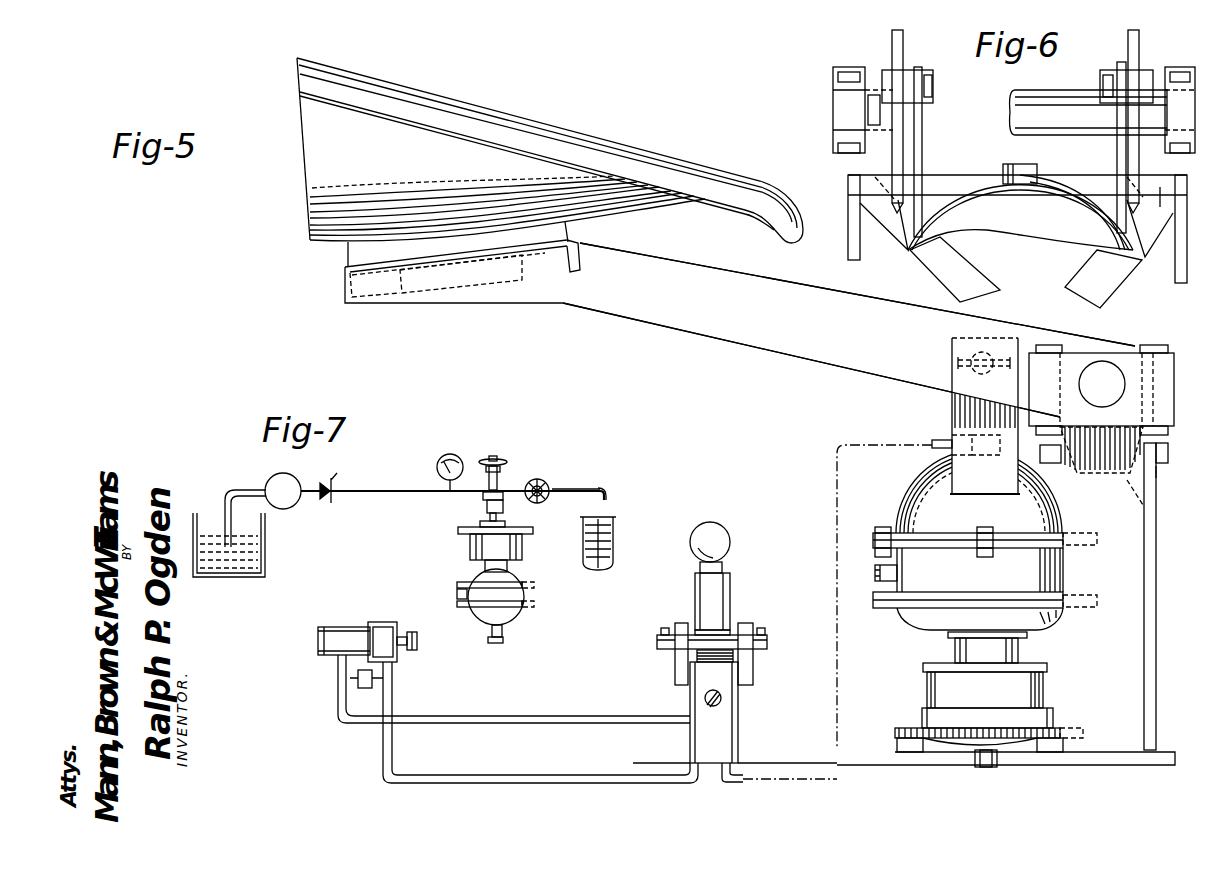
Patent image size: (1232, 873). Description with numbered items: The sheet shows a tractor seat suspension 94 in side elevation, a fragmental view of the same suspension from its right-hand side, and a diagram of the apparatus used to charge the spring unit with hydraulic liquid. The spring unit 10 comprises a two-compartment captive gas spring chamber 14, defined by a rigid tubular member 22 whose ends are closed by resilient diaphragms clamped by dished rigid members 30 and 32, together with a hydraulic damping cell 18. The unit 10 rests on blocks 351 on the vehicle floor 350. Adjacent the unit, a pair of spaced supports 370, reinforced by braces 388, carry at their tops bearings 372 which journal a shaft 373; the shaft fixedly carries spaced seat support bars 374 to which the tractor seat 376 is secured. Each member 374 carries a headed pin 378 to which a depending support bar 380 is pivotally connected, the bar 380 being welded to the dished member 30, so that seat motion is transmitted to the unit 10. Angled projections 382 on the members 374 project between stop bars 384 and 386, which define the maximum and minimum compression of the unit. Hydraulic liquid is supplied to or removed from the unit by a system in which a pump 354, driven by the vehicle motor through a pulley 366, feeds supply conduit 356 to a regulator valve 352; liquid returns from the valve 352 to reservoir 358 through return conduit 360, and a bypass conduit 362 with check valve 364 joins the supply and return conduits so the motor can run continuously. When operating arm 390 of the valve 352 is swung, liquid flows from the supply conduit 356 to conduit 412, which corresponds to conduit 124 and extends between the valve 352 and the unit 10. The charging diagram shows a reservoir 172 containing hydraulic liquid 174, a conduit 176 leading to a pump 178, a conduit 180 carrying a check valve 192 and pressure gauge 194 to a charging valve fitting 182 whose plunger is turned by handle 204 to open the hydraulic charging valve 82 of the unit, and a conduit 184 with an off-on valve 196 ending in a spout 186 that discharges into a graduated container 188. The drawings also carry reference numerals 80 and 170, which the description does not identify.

In FIG. 5, the spring unit 10 is at (1006, 640).
In FIG. 7, the spring unit 10 is at (455, 564).
In FIG. 5, the two-compartment captive gas spring chamber 14 is at (1040, 572).
In FIG. 5, the hydraulic damping cell 18 is at (912, 687).
In FIG. 5, the rigid tubular member 22 is at (927, 588).
In FIG. 5, the dished rigid member 30 is at (937, 482).
In FIG. 5, the dished rigid member 32 is at (927, 618).
In FIG. 5, the side nozzle 80 is at (877, 561).
In FIG. 5, the hydraulic charging valve 82 is at (990, 773).
In FIG. 7, the hydraulic charging valve 82 is at (503, 521).
In FIG. 5, the tractor seat suspension 94 is at (866, 395).
In FIG. 5, the conduit 124 is at (937, 438).
In FIG. 7, the liquid supply system 170 is at (212, 488).
In FIG. 7, the tank or reservoir 172 is at (263, 563).
In FIG. 7, the hydraulic liquid 174 is at (232, 568).
In FIG. 7, the conduit 176 is at (244, 489).
In FIG. 7, the pump 178 is at (283, 509).
In FIG. 7, the conduit 180 is at (358, 493).
In FIG. 7, the charging valve fitting 182 is at (490, 458).
In FIG. 7, the conduit 184 is at (563, 491).
In FIG. 7, the nozzle or spout 186 is at (603, 497).
In FIG. 7, the graduated container 188 is at (613, 528).
In FIG. 7, the check valve 192 is at (332, 491).
In FIG. 7, the pressure gauge 194 is at (437, 461).
In FIG. 7, the off-on valve 196 is at (543, 482).
In FIG. 7, the handle 204 is at (503, 462).
In FIG. 5, the vehicle floor 350 is at (877, 742).
In FIG. 5, the blocks 351 is at (910, 750).
In FIG. 7, the regulator valve 352 is at (740, 607).
In FIG. 7, the pump 354 is at (377, 622).
In FIG. 7, the supply conduit 356 is at (516, 766).
In FIG. 7, the reservoir 358 is at (343, 618).
In FIG. 7, the return conduit 360 is at (482, 717).
In FIG. 7, the bypass conduit 362 is at (375, 679).
In FIG. 7, the check valve 364 is at (362, 688).
In FIG. 7, the pulley 366 is at (417, 643).
In FIG. 5, the spaced supports 370 is at (1135, 608).
In FIG. 6, the spaced supports 370 is at (848, 251).
In FIG. 5, the bearings 372 is at (1068, 353).
In FIG. 6, the bearings 372 is at (843, 88).
In FIG. 5, the shaft 373 is at (1095, 368).
In FIG. 5, the seat support bars 374 is at (748, 258).
In FIG. 6, the seat support bars 374 is at (892, 40).
In FIG. 5, the tractor seat 376 is at (712, 145).
In FIG. 5, the headed pin 378 is at (984, 363).
In FIG. 6, the headed pin 378 is at (933, 85).
In FIG. 5, the depending support bar 380 is at (962, 415).
In FIG. 6, the depending support bar 380 is at (922, 156).
In FIG. 5, the angled projections 382 is at (1143, 505).
In FIG. 6, the angled projections 382 is at (893, 162).
In FIG. 5, the stop bar 384 is at (1157, 478).
In FIG. 6, the stop bar 384 is at (1157, 206).
In FIG. 5, the stop bar 386 is at (1052, 462).
In FIG. 6, the stop bar 386 is at (1065, 180).
In FIG. 6, the braces 388 is at (1077, 273).
In FIG. 7, the operating arm 390 is at (728, 578).
In FIG. 7, the conduit 412 is at (722, 782).